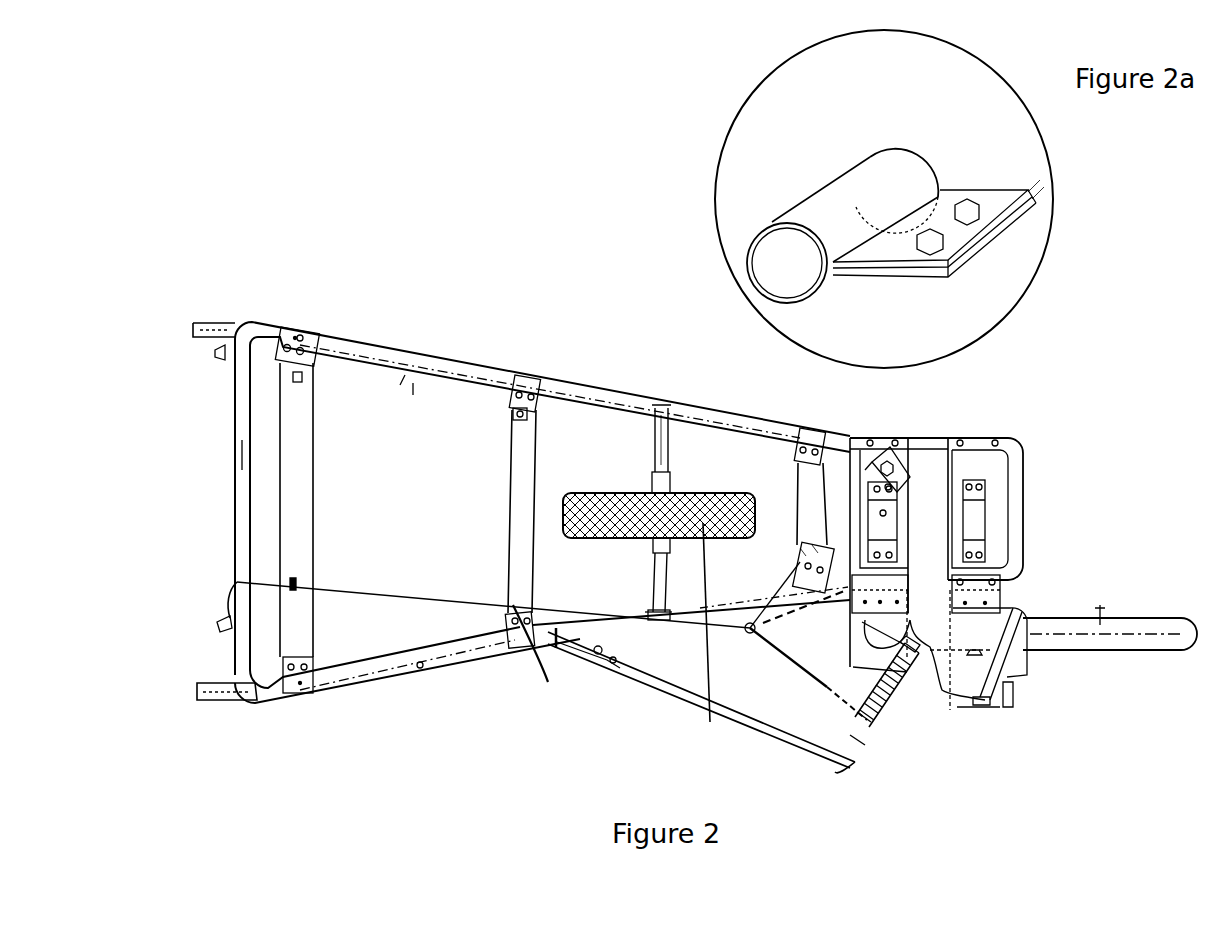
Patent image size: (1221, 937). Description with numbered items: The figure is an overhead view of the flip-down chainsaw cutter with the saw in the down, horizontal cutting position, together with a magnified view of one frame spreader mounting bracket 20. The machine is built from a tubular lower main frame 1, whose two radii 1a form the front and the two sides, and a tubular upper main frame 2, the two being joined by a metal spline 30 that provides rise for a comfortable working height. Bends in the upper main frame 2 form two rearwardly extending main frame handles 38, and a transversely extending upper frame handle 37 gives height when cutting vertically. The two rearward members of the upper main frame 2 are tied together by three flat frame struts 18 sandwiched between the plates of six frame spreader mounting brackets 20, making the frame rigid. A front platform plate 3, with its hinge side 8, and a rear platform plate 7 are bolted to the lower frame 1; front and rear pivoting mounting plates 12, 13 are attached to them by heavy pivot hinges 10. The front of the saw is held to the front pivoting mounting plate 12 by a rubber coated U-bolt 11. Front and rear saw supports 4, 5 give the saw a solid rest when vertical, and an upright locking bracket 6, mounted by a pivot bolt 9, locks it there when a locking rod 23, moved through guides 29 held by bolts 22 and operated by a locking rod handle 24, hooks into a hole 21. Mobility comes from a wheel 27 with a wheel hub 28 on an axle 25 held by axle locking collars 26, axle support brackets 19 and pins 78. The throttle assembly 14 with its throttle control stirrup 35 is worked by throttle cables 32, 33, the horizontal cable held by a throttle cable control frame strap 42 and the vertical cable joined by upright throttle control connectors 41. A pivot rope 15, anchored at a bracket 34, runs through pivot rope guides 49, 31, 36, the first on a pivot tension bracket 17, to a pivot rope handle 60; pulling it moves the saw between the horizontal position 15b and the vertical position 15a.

In FIG. 2, the lower main frame 1 is at (1017, 523).
In FIG. 2, the radius of lower main frame 1a is at (1015, 450).
In FIG. 2, the upper main frame 2 is at (757, 430).
In FIG. 2, the front platform plate 3 is at (990, 462).
In FIG. 2, the front saw support 4 is at (980, 517).
In FIG. 2, the rear saw support 5 is at (883, 525).
In FIG. 2, the upright locking bracket 6 is at (915, 482).
In FIG. 2, the rear platform plate 7 is at (900, 562).
In FIG. 2, the hinge side of front platform plate 8 is at (997, 550).
In FIG. 2, the pivot bolt for upright locking bracket 9 is at (885, 468).
In FIG. 2, the pivot hinge 10 is at (1000, 593).
In FIG. 2, the U-bolt 11 is at (1005, 700).
In FIG. 2, the front pivoting mounting plate 12 is at (988, 640).
In FIG. 2, the rear pivoting mounting plate 13 is at (892, 693).
In FIG. 2, the throttle assembly 14 is at (878, 710).
In FIG. 2, the pivot rope 15 is at (393, 592).
In FIG. 2, the pivot rope in up position 15a is at (815, 605).
In FIG. 2, the pivot rope in down position 15b is at (832, 640).
In FIG. 2, the pivot tension bracket 17 is at (788, 580).
In FIG. 2, the flat frame strut 18 is at (297, 402).
In FIG. 2, the axle support bracket 19 is at (668, 402).
In FIG. 2, the frame spreader mounting bracket 20 is at (297, 355).
In FIG. 2A, the frame spreader mounting bracket 20 is at (895, 226).
In FIG. 2, the hole for mounting rod to locking bracket 21 is at (826, 527).
In FIG. 2, the bolt for mounting locking rod guide 22 is at (300, 377).
In FIG. 2, the locking rod 23 is at (413, 387).
In FIG. 2, the locking rod handle 24 is at (213, 345).
In FIG. 2, the axle 25 is at (660, 445).
In FIG. 2, the axle locking collar 26 is at (652, 463).
In FIG. 2, the wheel 27 is at (710, 640).
In FIG. 2, the wheel hub 28 is at (657, 547).
In FIG. 2, the guides for locking rod 29 is at (297, 380).
In FIG. 2, the spline 30 is at (873, 587).
In FIG. 2, the pivot rope guide 31 is at (556, 650).
In FIG. 2, the throttle cable for vertical position 32 is at (597, 652).
In FIG. 2, the throttle cable for horizontal position 33 is at (677, 688).
In FIG. 2, the bracket for mounting throttle cable guide and pivot rope eye bolt 34 is at (868, 718).
In FIG. 2, the throttle control stirrup 35 is at (910, 645).
In FIG. 2, the pivot rope guide 36 is at (283, 577).
In FIG. 2, the upper frame handle 37 is at (242, 457).
In FIG. 2, the main frame handle 38 is at (218, 690).
In FIG. 2, the upright throttle control connector 41 is at (615, 662).
In FIG. 2, the throttle cable control frame strap 42 is at (545, 685).
In FIG. 2, the pivot rope guide 49 is at (750, 633).
In FIG. 2, the pivot rope handle 60 is at (230, 630).
In FIG. 2, the pin 78 is at (665, 618).